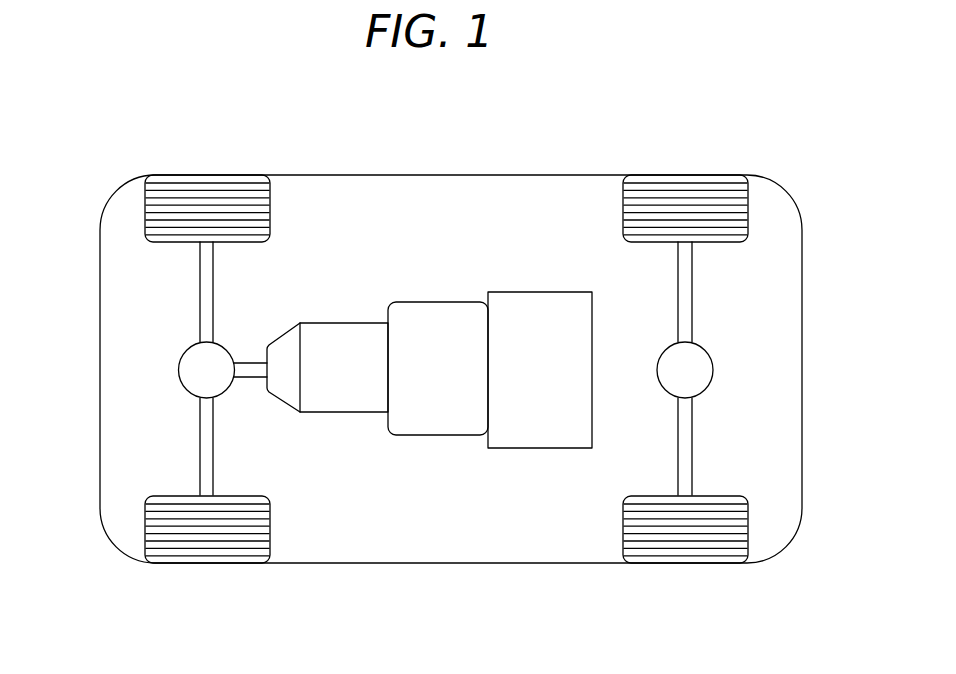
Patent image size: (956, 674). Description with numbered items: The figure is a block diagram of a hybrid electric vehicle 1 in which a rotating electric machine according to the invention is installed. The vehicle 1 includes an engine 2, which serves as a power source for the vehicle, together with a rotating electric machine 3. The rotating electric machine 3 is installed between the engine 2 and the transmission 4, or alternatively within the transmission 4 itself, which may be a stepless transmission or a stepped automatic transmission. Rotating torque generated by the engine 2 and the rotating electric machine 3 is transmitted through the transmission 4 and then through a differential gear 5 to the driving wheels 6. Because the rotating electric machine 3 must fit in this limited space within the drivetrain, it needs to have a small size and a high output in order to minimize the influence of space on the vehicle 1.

The vehicle 1 is at (773, 226).
The engine 2 is at (540, 292).
The rotating electric machine 3 is at (438, 300).
The transmission 4 is at (345, 413).
The differential gear 5 is at (187, 392).
The wheels 6 is at (197, 185).